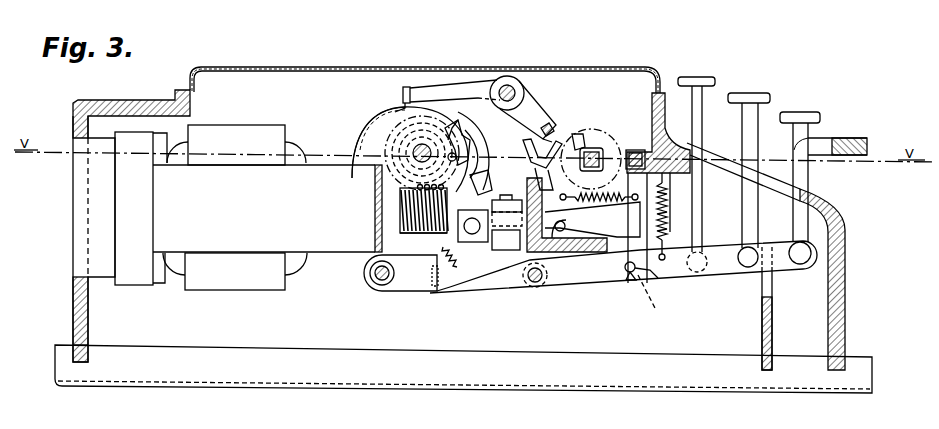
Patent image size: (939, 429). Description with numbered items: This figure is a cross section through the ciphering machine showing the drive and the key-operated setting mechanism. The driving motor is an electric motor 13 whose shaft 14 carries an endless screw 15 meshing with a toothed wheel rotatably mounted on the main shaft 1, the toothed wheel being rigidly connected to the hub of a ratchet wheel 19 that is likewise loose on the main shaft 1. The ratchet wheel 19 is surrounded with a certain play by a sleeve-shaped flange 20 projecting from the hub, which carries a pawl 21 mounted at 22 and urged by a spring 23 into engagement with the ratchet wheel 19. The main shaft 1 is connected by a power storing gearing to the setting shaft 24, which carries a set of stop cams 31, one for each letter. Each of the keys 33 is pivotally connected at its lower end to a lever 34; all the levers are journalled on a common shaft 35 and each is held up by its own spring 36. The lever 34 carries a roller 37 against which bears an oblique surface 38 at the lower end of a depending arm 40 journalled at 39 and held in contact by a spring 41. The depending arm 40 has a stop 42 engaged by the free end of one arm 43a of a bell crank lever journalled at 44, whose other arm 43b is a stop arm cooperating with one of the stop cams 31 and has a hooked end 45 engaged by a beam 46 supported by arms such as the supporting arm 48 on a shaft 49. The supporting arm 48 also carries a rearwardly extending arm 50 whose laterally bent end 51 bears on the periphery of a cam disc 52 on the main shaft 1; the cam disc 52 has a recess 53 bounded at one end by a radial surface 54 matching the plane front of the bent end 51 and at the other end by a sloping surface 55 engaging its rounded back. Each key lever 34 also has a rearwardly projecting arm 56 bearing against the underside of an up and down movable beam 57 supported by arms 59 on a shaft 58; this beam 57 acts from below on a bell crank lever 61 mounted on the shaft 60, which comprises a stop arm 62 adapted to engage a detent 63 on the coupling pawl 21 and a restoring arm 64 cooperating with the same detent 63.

The main shaft 1 is at (412, 164).
The electric motor 13 is at (263, 127).
The shaft 14 is at (402, 223).
The endless screw 15 is at (403, 236).
The ratchet wheel 19 is at (400, 143).
The sleeve-shaped flange 20 is at (412, 152).
The pawl 21 is at (402, 185).
The pawl mounting 22 is at (472, 150).
The spring 23 is at (455, 125).
The setting shaft 24 is at (595, 152).
The stop cams 31 is at (576, 135).
The keys 33 is at (697, 80).
The lever 34 is at (717, 268).
The shaft 35 is at (535, 282).
The spring 36 is at (638, 197).
The roller 37 is at (658, 278).
The oblique surface 38 is at (654, 303).
The journal 39 is at (635, 150).
The depending arm 40 is at (668, 212).
The spring 41 is at (668, 228).
The stop 42 is at (617, 233).
The arm of bell crank lever 43a is at (583, 222).
The stop arm 43b is at (540, 165).
The journal 44 is at (561, 231).
The hooked end 45 is at (548, 143).
The beam 46 is at (550, 134).
The supporting arm 48 is at (547, 127).
The shaft 49 is at (509, 90).
The rearwardly extending arm 50 is at (430, 91).
The bent end 51 is at (405, 95).
The cam disc 52 is at (353, 124).
The recess 53 is at (387, 112).
The radial surface 54 is at (409, 87).
The sloping surface 55 is at (370, 127).
The rearwardly projecting arm 56 is at (453, 293).
The beam 57 is at (433, 292).
The shaft 58 is at (370, 280).
The arms 59 is at (400, 283).
The shaft 60 is at (473, 234).
The bell crank lever 61 is at (435, 250).
The stop arm 62 is at (473, 160).
The detent 63 is at (466, 150).
The restoring arm 64 is at (390, 212).